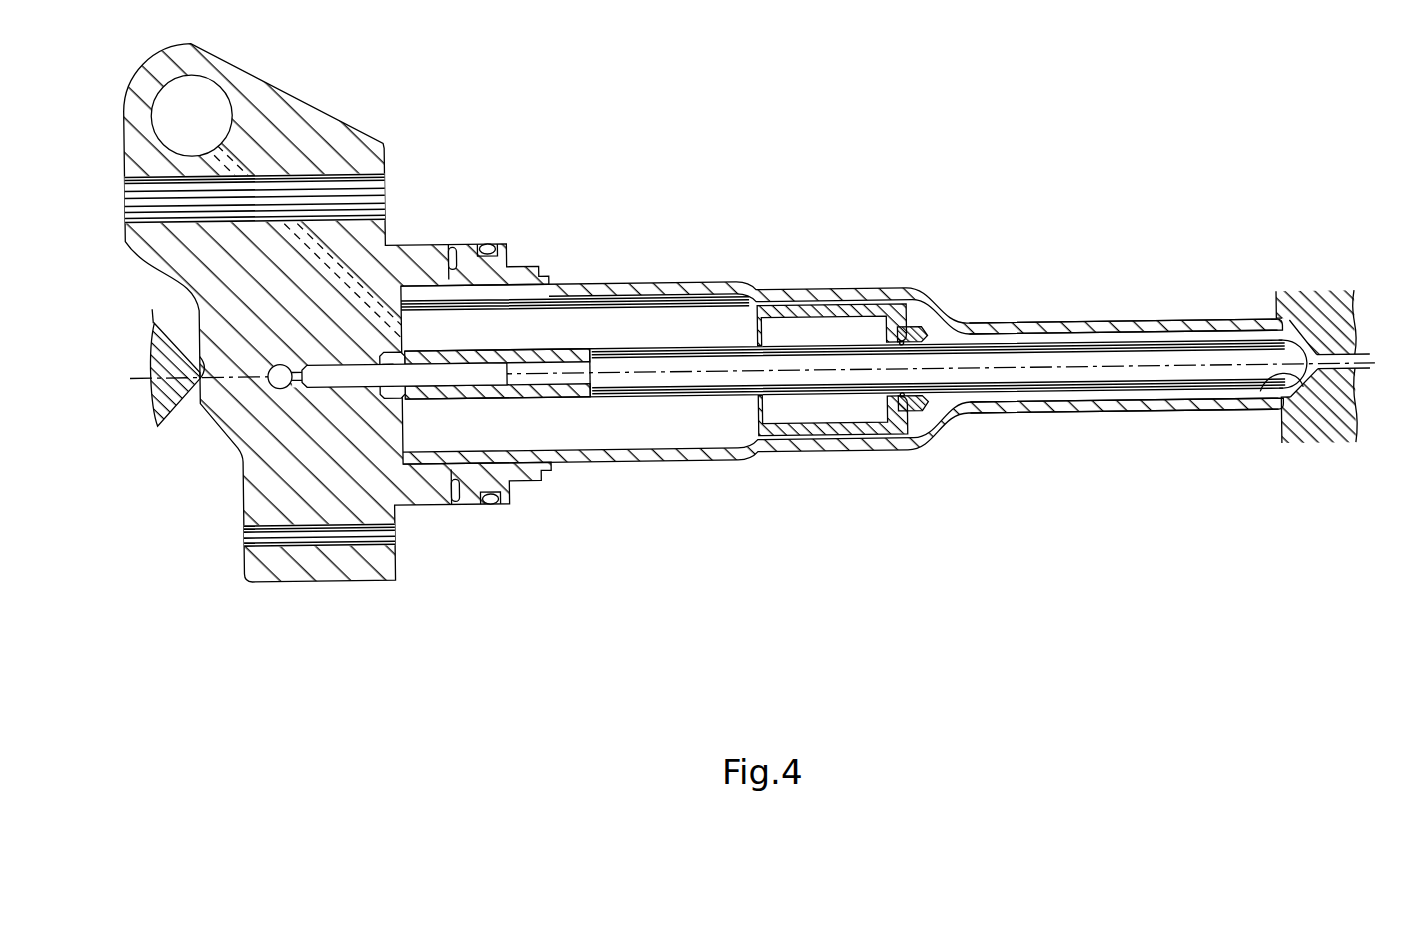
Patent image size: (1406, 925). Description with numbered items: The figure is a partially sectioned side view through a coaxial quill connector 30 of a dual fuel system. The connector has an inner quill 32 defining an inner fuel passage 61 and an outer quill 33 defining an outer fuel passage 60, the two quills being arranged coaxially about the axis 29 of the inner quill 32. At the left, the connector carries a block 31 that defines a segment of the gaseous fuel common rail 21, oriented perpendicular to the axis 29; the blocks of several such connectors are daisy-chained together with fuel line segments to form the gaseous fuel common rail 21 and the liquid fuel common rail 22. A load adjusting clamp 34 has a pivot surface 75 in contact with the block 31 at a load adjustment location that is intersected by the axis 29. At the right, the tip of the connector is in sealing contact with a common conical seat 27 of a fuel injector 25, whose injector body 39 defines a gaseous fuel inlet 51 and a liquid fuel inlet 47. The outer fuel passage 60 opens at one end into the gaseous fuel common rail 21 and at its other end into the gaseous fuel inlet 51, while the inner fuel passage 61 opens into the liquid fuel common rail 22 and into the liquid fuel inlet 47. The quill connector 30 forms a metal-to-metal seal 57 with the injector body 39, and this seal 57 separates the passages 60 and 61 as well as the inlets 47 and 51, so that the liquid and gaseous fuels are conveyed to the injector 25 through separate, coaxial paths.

The gaseous fuel common rail 21 is at (160, 100).
The liquid fuel common rail 22 is at (270, 385).
The fuel injector 25 is at (1280, 444).
The common conical seat 27 is at (1276, 335).
The axis 29 is at (1196, 371).
The coaxial quill connector 30 is at (775, 228).
The block 31 is at (293, 97).
The inner quill 32 is at (1085, 364).
The outer quill 33 is at (973, 431).
The load adjusting clamp 34 is at (157, 427).
The injector body 39 is at (1350, 398).
The liquid fuel inlet 47 is at (1318, 355).
The gaseous fuel inlet 51 is at (1305, 414).
The metal-to-metal seal 57 is at (1262, 394).
The outer fuel passage 60 is at (388, 201).
The inner fuel passage 61 is at (577, 376).
The pivot surface 75 is at (200, 350).